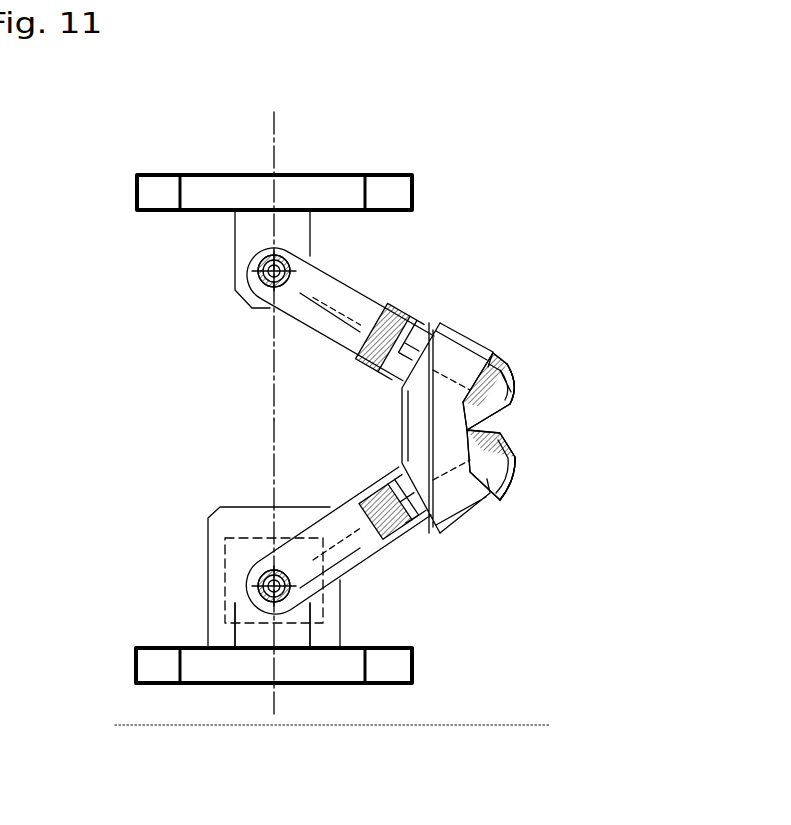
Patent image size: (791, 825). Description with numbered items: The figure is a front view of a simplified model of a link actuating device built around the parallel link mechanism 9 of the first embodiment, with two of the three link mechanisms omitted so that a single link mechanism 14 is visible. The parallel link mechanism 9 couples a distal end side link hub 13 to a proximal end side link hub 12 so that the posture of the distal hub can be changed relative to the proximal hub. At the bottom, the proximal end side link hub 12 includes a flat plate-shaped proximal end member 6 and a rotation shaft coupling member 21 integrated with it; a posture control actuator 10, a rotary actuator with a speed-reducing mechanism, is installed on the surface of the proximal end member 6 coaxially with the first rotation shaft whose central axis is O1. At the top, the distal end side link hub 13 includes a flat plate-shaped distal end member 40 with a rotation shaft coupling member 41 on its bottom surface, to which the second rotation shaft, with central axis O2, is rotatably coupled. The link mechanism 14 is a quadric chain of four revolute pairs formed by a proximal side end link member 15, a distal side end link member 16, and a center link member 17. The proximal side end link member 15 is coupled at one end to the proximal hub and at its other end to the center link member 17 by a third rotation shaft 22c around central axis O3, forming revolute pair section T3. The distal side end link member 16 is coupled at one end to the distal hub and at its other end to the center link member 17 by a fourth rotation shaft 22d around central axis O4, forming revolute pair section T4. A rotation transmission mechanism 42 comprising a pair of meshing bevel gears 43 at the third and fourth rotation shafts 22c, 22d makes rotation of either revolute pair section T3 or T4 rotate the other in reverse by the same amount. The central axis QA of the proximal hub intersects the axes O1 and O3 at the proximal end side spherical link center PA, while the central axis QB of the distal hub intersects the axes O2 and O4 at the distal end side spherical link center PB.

The parallel link mechanism 9 is at (552, 150).
The distal end side link hub 13 is at (303, 190).
The distal end member 40 is at (332, 190).
The rotation shaft coupling member 41 is at (300, 235).
The distal side end link member 16 is at (360, 288).
The proximal side end link member 15 is at (352, 580).
The center link member 17 is at (467, 345).
The link mechanism 14 is at (473, 533).
The rotation transmission mechanism 42 is at (516, 349).
The bevel gear 43 is at (505, 370).
The fourth rotation shaft 22d is at (518, 398).
The third rotation shaft 22c is at (518, 463).
The revolute pair section T4 is at (540, 417).
The revolute pair section T3 is at (541, 452).
The posture control actuator 10 is at (247, 533).
The proximal end side link hub 12 is at (276, 705).
The rotation shaft coupling member 21 is at (293, 638).
The proximal end member 6 is at (384, 670).
The central axis of the proximal end side link hub QA is at (272, 700).
The central axis of the distal end side link hub QB is at (272, 147).
The proximal end side spherical link center PA is at (262, 590).
The distal end side spherical link center PB is at (262, 266).
The central axis of the first rotation shaft O1 is at (274, 586).
The central axis of the second rotation shaft O2 is at (274, 271).
The central axis of the third rotation shaft O3 is at (390, 567).
The central axis of the fourth rotation shaft O4 is at (395, 300).